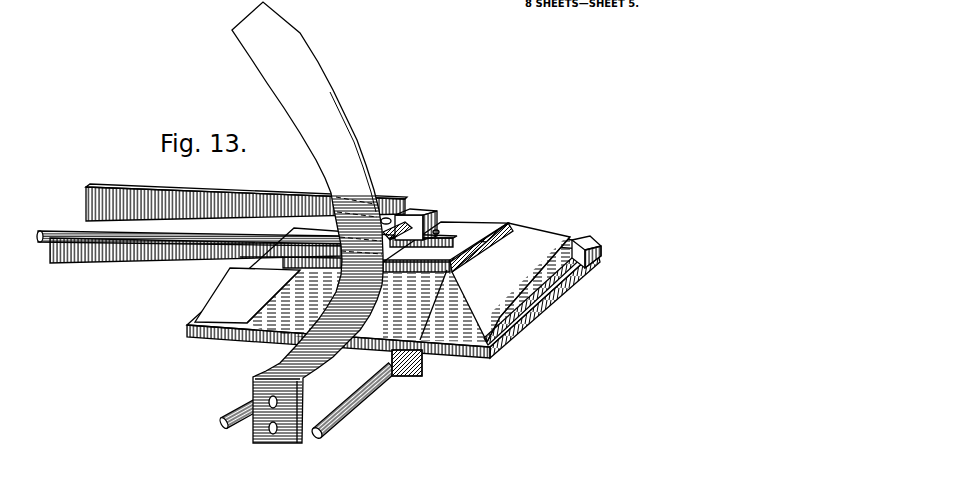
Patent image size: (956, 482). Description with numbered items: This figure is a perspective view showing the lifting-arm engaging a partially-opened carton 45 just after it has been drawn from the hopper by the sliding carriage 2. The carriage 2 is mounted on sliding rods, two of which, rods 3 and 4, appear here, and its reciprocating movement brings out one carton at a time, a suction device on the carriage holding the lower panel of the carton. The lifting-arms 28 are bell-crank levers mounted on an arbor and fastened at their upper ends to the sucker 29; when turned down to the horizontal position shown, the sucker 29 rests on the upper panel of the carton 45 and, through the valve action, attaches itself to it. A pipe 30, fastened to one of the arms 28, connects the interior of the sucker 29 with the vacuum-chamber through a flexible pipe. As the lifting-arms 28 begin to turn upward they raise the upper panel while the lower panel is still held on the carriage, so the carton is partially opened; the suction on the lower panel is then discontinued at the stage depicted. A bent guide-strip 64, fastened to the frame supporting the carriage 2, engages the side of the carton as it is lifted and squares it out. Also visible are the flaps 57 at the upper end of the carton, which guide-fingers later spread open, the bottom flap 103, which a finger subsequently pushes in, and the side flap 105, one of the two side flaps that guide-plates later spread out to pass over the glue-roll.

The sliding carriage 2 is at (537, 317).
The sliding rod 3 is at (235, 407).
The sliding rod 4 is at (357, 405).
The lifting-arms 28 is at (122, 200).
The sucker 29 is at (480, 227).
The pipe 30 is at (43, 243).
The carton 45 is at (417, 317).
The flaps 57 is at (537, 240).
The bent guide-strip 64 is at (333, 117).
The bottom flap 103 is at (225, 298).
The side flap 105 is at (245, 260).